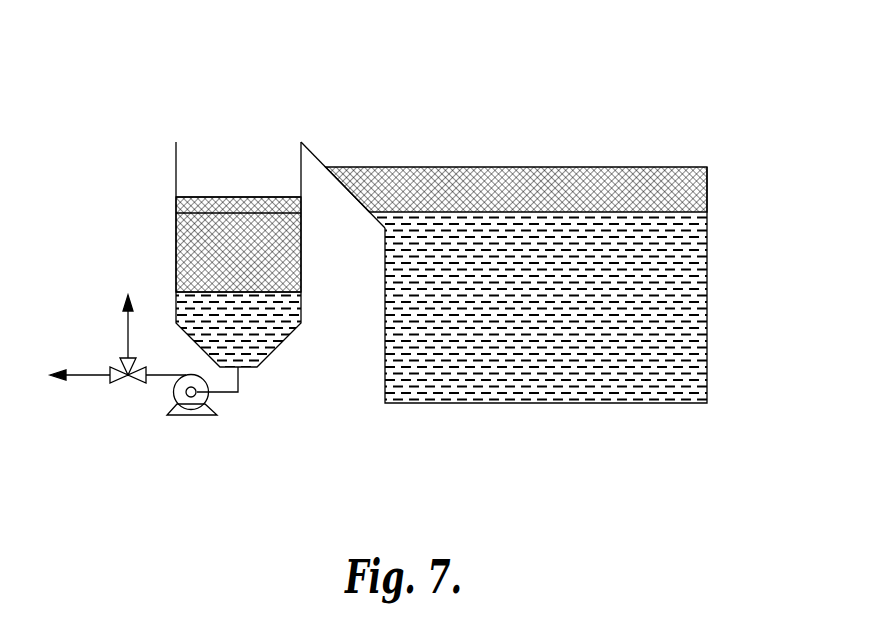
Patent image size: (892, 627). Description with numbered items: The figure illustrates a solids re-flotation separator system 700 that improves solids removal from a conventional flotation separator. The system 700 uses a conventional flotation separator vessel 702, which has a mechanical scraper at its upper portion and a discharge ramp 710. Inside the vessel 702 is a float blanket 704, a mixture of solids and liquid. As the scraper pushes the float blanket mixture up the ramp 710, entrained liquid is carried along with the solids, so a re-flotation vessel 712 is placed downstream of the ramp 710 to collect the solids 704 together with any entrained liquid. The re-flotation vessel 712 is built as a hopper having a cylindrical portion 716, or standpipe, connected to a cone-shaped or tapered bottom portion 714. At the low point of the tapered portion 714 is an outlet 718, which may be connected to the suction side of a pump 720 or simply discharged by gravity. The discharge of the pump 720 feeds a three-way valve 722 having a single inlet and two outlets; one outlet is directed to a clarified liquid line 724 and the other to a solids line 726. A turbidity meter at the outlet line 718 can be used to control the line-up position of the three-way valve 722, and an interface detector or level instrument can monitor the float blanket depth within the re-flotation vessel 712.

The system 700 is at (688, 298).
The flotation separator vessel 702 is at (707, 345).
The float blanket 704 is at (707, 192).
The discharge ramp 710 is at (315, 152).
The re-flotation vessel 712 is at (176, 187).
The tapered bottom portion 714 is at (278, 330).
The cylindrical portion 716 is at (176, 247).
The outlet 718 is at (245, 383).
The pump 720 is at (193, 416).
The three-way valve 722 is at (127, 382).
The clarified liquid line 724 is at (86, 375).
The solids line 726 is at (128, 322).